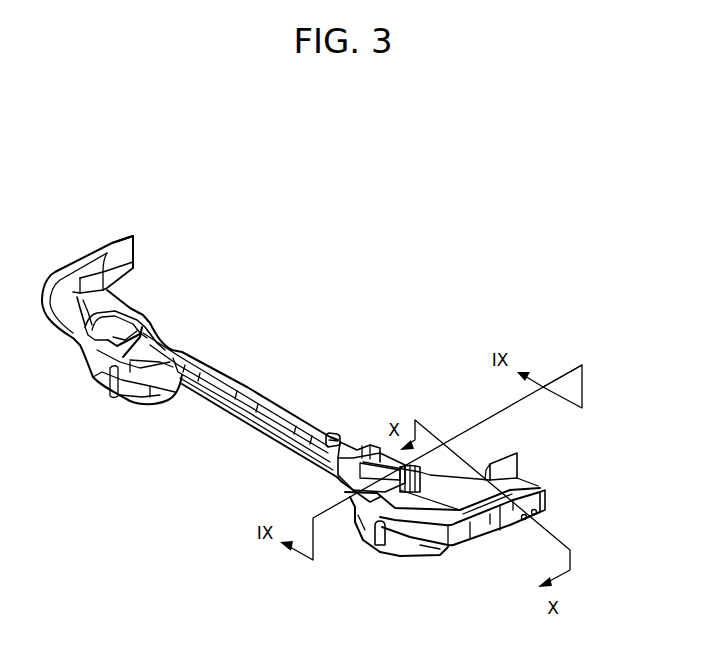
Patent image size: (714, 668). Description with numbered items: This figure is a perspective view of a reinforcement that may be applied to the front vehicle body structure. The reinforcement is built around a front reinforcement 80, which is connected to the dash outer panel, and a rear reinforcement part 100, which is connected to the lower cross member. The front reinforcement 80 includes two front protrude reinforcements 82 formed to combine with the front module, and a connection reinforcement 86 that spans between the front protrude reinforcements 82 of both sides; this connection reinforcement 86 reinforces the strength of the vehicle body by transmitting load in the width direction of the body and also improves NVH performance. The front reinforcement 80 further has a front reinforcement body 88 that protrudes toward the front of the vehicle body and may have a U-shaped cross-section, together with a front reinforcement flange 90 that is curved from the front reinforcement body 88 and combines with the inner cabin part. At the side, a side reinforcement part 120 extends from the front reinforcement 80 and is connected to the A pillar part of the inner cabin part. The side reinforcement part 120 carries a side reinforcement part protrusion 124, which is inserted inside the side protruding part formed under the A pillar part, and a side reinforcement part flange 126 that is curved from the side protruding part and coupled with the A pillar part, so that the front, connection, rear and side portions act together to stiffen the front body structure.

The front reinforcement 80 is at (380, 575).
The front protrude reinforcement 82 is at (367, 532).
The connection reinforcement 86 is at (258, 362).
The front reinforcement body 88 is at (273, 425).
The front reinforcement flange 90 is at (341, 440).
The rear reinforcement part 100 is at (165, 428).
The side reinforcement part 120 is at (563, 488).
The side reinforcement part protrusion 124 is at (483, 540).
The side reinforcement part flange 126 is at (515, 462).